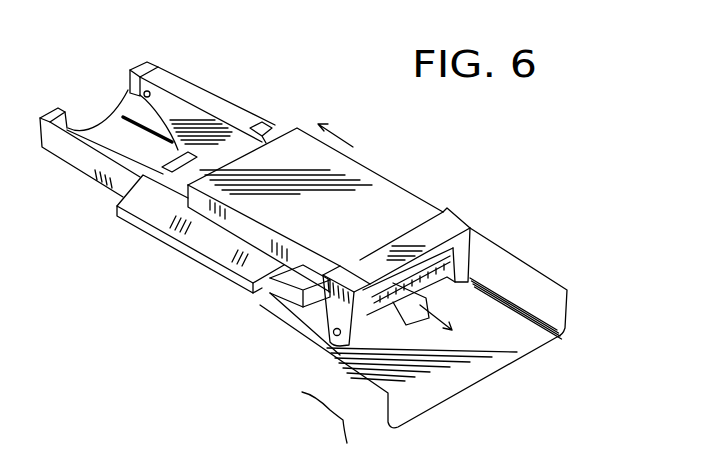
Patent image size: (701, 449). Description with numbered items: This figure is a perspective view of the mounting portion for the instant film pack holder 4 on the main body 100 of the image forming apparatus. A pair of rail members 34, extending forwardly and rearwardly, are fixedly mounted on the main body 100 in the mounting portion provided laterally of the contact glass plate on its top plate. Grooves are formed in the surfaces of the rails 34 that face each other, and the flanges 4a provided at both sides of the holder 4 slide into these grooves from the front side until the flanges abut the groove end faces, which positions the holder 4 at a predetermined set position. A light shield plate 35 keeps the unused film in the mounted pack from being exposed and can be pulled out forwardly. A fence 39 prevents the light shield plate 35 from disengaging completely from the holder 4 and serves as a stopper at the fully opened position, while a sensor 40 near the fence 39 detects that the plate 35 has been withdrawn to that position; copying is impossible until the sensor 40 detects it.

The instant film pack holder 4 is at (385, 198).
The flanges 4a is at (292, 290).
The rail members 34 is at (160, 222).
The light shield plate 35 is at (225, 148).
The fence 39 is at (150, 62).
The sensor 40 is at (155, 93).
The main body 100 is at (553, 249).